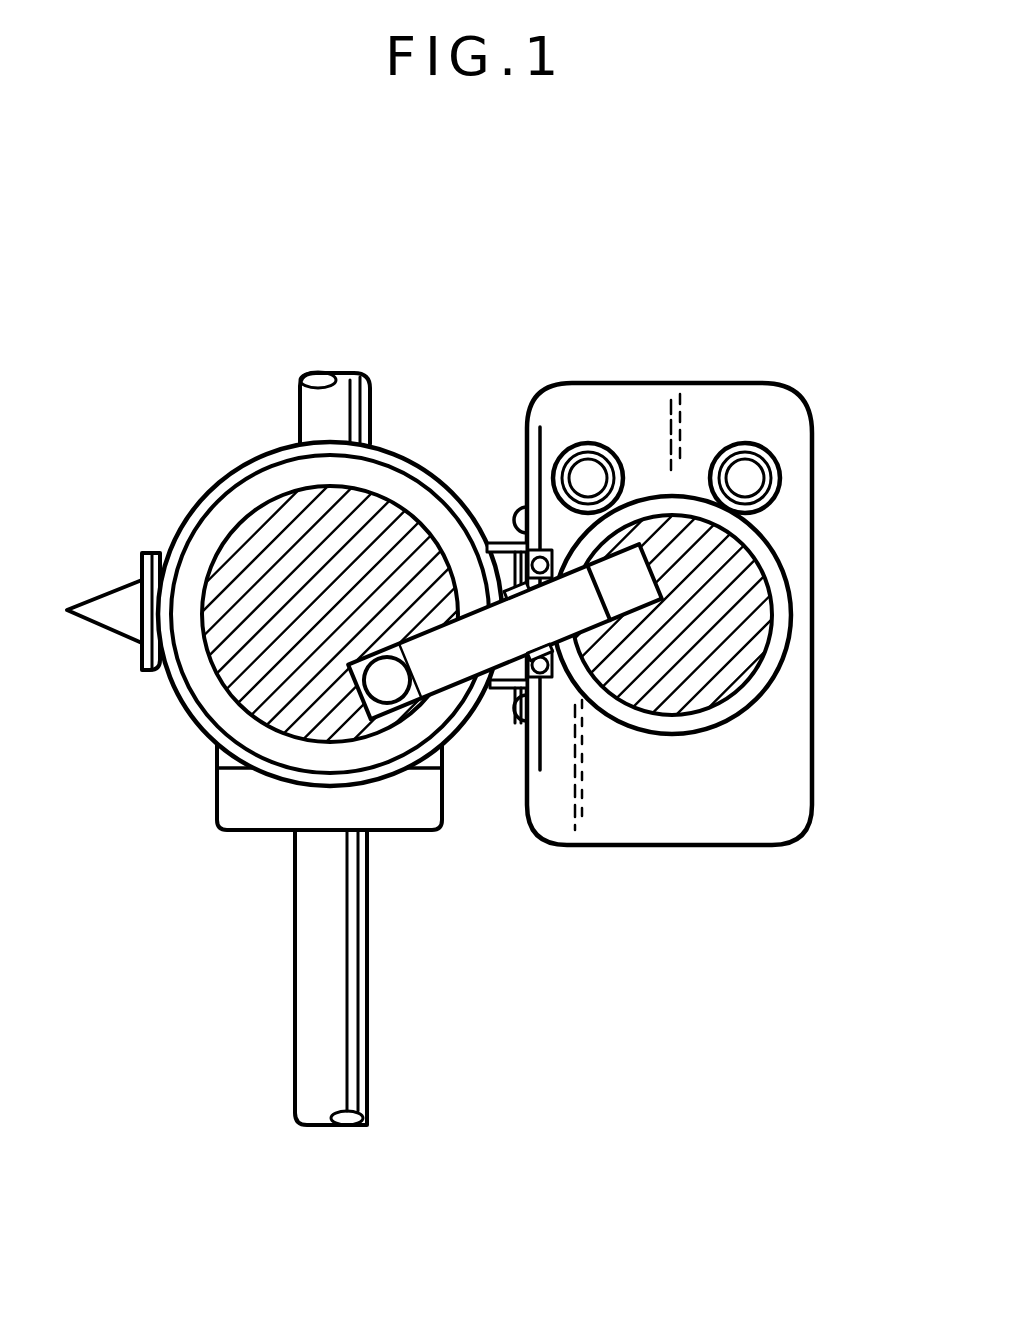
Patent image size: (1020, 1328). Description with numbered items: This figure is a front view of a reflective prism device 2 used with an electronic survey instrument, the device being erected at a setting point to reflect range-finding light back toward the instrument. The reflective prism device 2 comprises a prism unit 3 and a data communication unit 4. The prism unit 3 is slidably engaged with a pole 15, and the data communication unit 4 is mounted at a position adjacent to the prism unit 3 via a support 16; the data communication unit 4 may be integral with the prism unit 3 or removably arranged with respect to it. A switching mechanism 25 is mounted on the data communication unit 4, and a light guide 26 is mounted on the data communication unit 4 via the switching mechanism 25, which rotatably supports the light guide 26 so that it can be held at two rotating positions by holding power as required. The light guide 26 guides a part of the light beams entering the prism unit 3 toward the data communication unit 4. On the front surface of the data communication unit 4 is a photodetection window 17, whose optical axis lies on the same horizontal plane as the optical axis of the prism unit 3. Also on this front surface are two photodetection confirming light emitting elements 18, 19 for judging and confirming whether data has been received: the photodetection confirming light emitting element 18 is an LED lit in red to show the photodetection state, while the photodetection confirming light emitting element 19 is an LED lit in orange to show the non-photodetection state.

The reflective prism device 2 is at (567, 995).
The prism unit 3 is at (203, 735).
The data communication unit 4 is at (728, 847).
The pole 15 is at (295, 1052).
The support 16 is at (498, 695).
The photodetection window 17 is at (770, 585).
The photodetection confirming light emitting element 18 is at (589, 445).
The photodetection confirming light emitting element 19 is at (745, 445).
The switching mechanism 25 is at (527, 422).
The light guide 26 is at (443, 672).